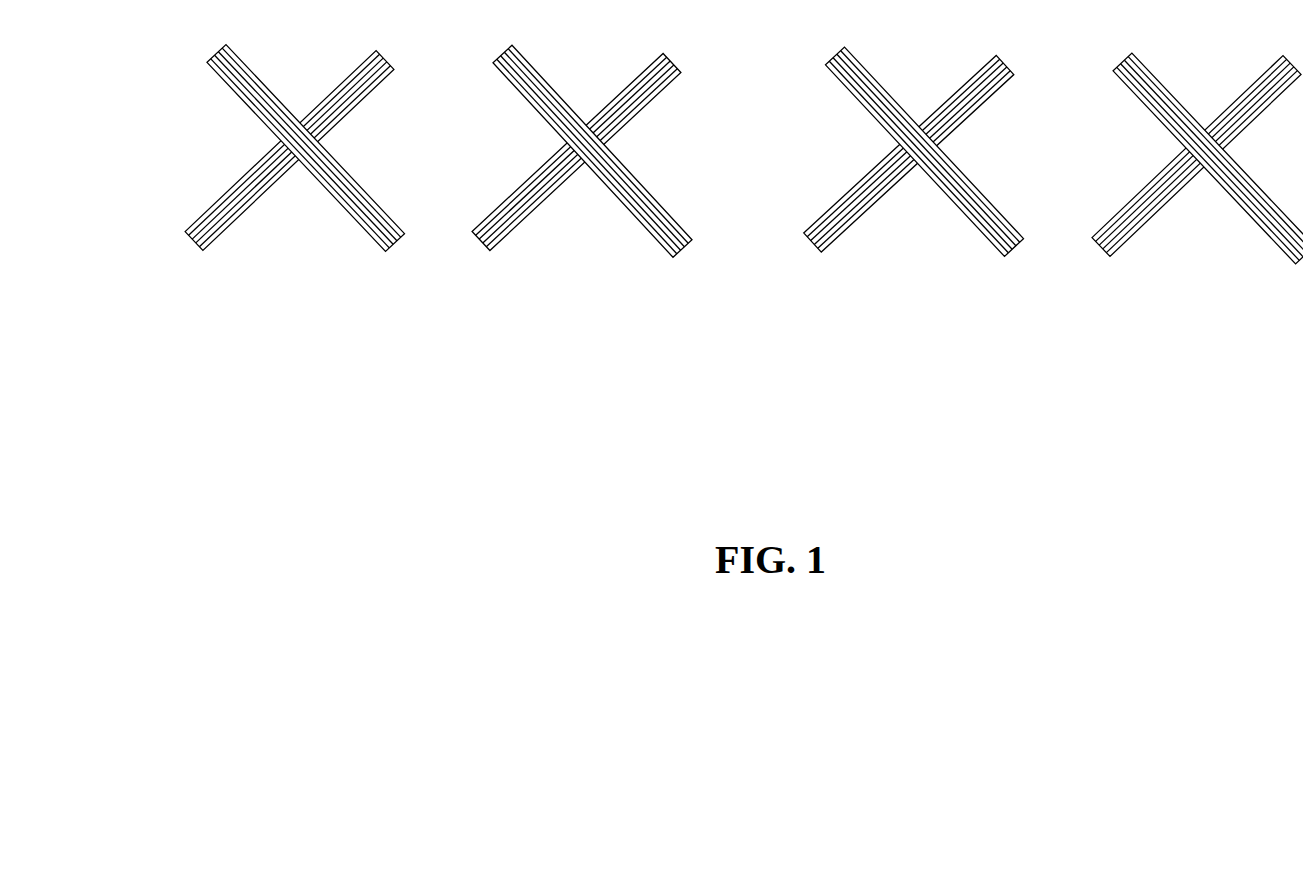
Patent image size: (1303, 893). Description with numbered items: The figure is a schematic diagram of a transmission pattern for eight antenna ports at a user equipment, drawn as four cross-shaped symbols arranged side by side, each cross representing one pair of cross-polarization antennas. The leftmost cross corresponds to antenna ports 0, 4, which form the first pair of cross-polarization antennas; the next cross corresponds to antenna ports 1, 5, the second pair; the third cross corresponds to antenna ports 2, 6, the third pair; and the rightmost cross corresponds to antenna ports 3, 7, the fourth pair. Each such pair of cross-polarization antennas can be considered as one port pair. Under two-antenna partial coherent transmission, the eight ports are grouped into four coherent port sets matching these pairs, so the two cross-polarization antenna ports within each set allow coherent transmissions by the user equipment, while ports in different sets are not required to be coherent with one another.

The antenna port 0 is at (274, 180).
The antenna port 4 is at (306, 177).
The antenna port 1 is at (564, 182).
The antenna port 5 is at (592, 177).
The antenna port 2 is at (894, 182).
The antenna port 6 is at (925, 178).
The antenna port 3 is at (1184, 182).
The antenna port 7 is at (1208, 181).